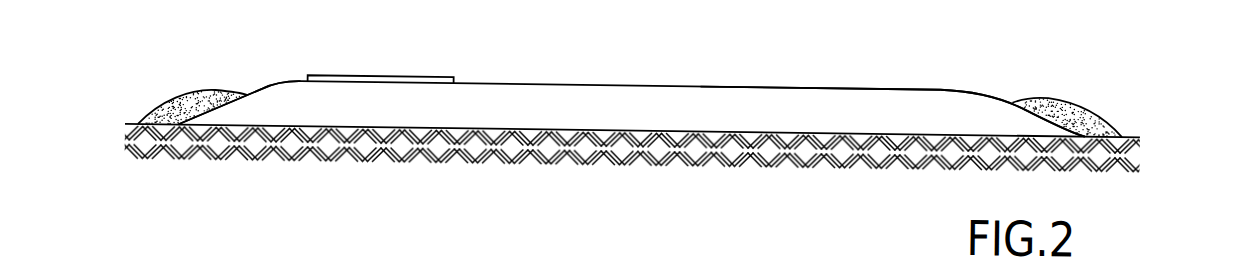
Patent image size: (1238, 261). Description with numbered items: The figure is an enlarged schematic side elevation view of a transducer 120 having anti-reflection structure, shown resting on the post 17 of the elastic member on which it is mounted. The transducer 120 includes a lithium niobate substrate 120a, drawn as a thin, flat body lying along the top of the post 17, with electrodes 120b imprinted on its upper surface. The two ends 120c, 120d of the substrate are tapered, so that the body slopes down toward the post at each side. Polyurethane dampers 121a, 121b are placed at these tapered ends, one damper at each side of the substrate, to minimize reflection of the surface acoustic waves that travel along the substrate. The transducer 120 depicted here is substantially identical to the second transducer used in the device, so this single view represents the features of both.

The post 17 is at (322, 149).
The transducer 120 is at (693, 54).
The lithium niobate substrate 120a is at (804, 89).
The electrodes 120b is at (365, 72).
The end of the substrate 120c is at (998, 100).
The end of the substrate 120d is at (237, 110).
The polyurethane damper 121a is at (175, 100).
The polyurethane damper 121b is at (1060, 90).